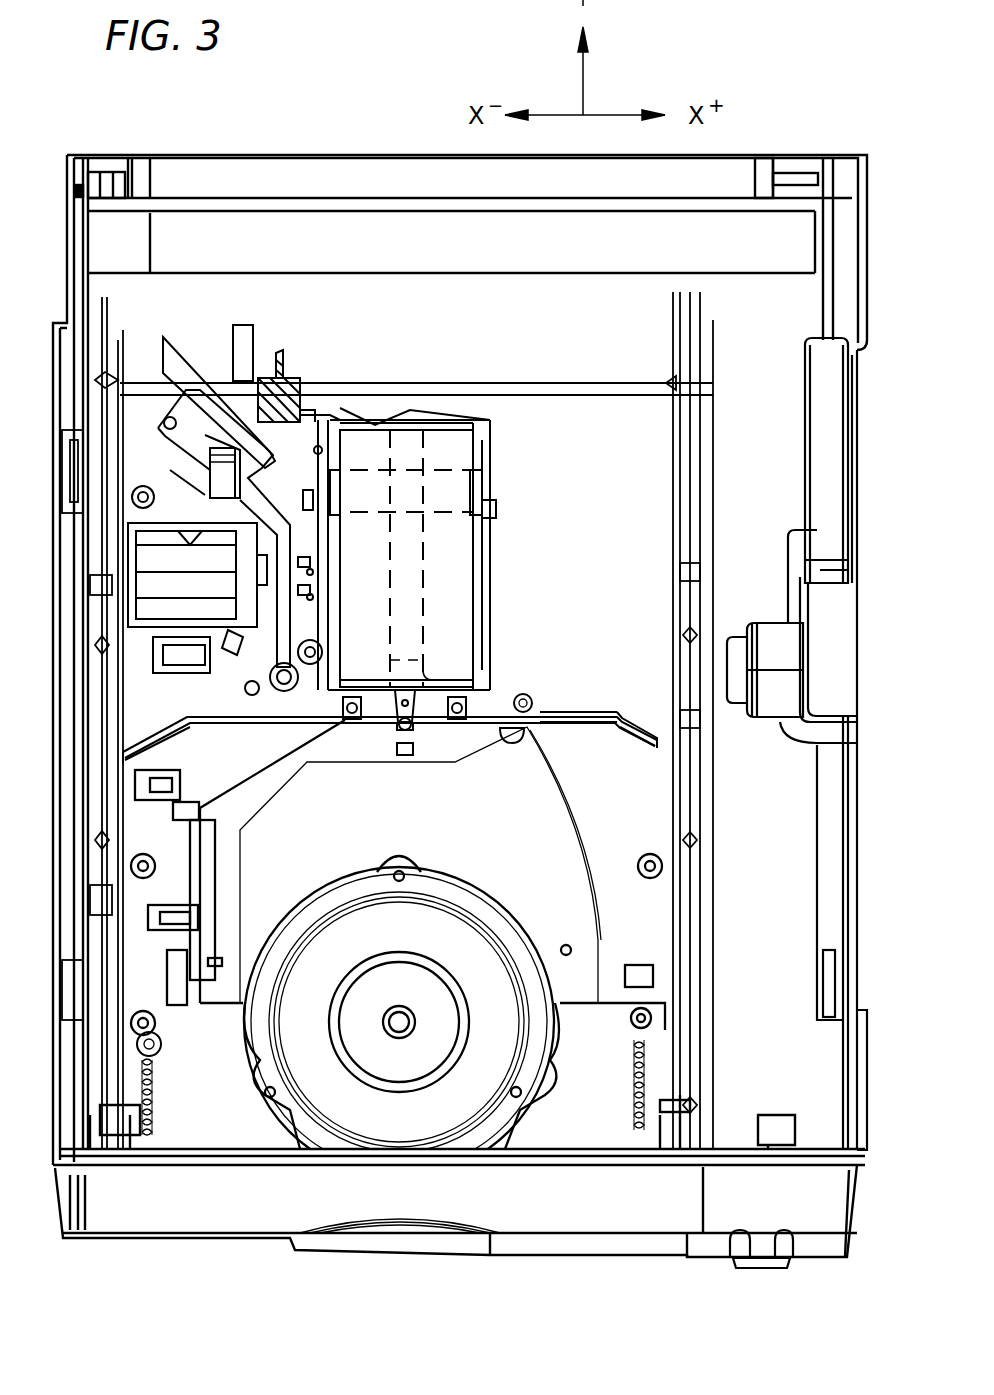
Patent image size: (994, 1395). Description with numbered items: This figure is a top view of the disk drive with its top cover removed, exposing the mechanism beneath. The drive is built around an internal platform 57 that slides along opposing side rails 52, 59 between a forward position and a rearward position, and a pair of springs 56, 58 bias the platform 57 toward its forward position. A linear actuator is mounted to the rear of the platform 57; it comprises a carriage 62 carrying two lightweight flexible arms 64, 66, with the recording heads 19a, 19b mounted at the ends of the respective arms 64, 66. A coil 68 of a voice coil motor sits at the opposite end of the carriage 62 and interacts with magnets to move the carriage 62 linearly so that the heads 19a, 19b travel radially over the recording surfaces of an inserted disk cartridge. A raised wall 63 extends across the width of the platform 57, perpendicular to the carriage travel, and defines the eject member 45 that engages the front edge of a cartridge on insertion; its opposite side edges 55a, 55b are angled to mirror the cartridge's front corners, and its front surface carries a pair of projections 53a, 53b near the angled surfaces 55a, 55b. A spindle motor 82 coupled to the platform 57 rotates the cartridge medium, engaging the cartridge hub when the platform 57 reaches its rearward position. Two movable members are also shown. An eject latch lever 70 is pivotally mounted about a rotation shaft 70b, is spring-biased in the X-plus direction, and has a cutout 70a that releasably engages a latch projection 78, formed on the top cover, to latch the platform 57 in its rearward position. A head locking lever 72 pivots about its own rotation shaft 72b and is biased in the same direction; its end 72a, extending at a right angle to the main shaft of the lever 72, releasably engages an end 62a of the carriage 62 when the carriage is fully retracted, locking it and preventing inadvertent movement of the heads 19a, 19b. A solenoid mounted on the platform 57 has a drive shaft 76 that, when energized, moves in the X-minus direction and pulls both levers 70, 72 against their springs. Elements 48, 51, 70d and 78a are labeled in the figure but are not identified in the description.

The recording head 19a is at (408, 755).
The recording head 19b is at (408, 755).
The eject member 45 is at (760, 1270).
The front bezel 48 is at (230, 1230).
The front bezel recess 51 is at (360, 1225).
The side rail 52 is at (105, 600).
The projection 53a is at (205, 713).
The projection 53b is at (600, 712).
The side edge 55a is at (58, 693).
The side edge 55b is at (625, 742).
The spring 56 is at (170, 1135).
The internal platform 57 is at (541, 876).
The spring 58 is at (635, 1125).
The side rail 59 is at (695, 520).
The carriage assembly 62 is at (423, 552).
The end of carriage 62a is at (410, 453).
The raised wall 63 is at (552, 700).
The flexible arm 64 is at (430, 672).
The flexible arm 66 is at (442, 649).
The coil 68 is at (462, 475).
The eject latch lever 70 is at (218, 470).
The cutout 70a is at (222, 492).
The rotation shaft 70b is at (260, 670).
The lever blade 70d is at (170, 345).
The head locking lever 72 is at (322, 430).
The end of head locking lever 72a is at (398, 412).
The rotation shaft 72b is at (355, 612).
The drive shaft 76 is at (300, 588).
The latch projection 78 is at (280, 380).
The eject cam block 78a is at (275, 410).
The spindle motor 82 is at (422, 1070).